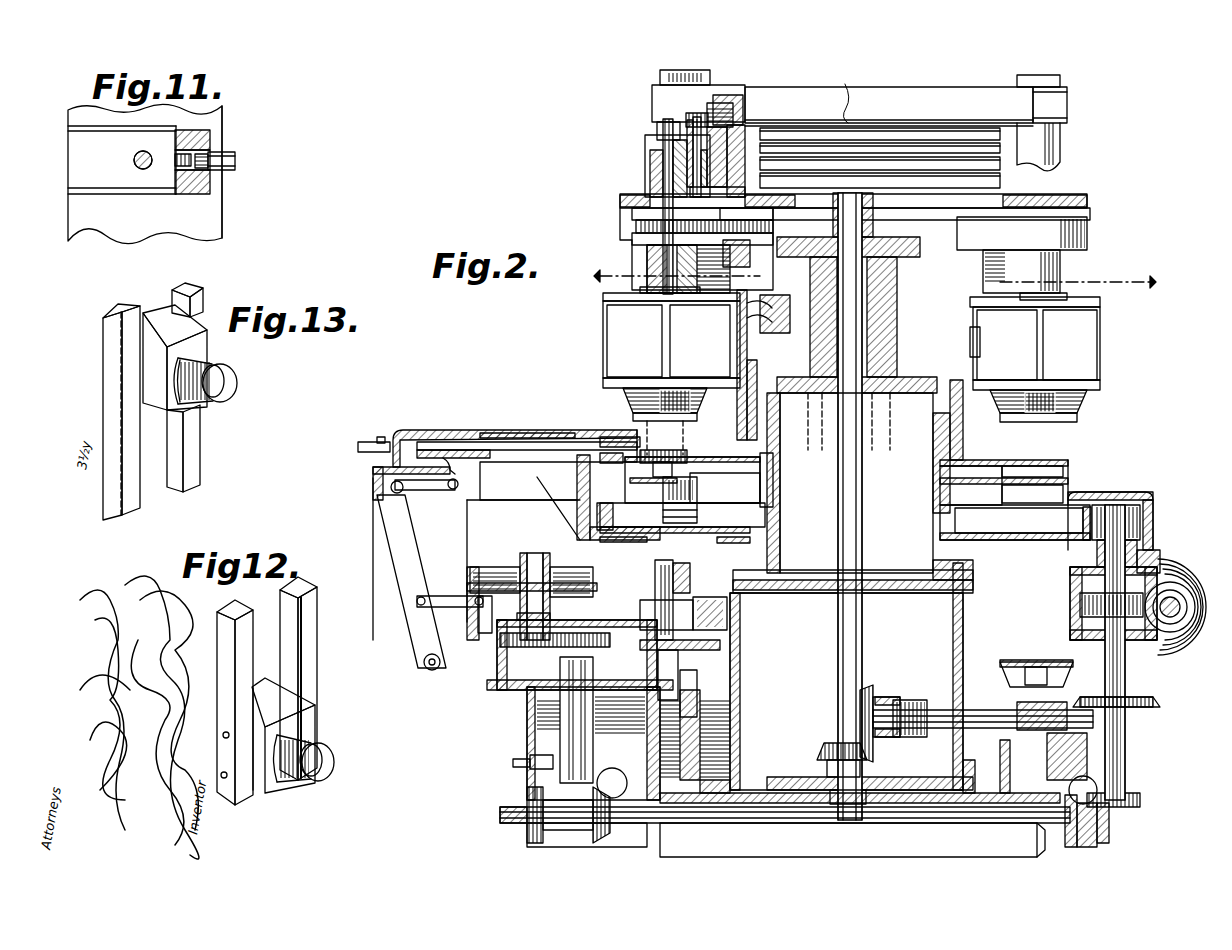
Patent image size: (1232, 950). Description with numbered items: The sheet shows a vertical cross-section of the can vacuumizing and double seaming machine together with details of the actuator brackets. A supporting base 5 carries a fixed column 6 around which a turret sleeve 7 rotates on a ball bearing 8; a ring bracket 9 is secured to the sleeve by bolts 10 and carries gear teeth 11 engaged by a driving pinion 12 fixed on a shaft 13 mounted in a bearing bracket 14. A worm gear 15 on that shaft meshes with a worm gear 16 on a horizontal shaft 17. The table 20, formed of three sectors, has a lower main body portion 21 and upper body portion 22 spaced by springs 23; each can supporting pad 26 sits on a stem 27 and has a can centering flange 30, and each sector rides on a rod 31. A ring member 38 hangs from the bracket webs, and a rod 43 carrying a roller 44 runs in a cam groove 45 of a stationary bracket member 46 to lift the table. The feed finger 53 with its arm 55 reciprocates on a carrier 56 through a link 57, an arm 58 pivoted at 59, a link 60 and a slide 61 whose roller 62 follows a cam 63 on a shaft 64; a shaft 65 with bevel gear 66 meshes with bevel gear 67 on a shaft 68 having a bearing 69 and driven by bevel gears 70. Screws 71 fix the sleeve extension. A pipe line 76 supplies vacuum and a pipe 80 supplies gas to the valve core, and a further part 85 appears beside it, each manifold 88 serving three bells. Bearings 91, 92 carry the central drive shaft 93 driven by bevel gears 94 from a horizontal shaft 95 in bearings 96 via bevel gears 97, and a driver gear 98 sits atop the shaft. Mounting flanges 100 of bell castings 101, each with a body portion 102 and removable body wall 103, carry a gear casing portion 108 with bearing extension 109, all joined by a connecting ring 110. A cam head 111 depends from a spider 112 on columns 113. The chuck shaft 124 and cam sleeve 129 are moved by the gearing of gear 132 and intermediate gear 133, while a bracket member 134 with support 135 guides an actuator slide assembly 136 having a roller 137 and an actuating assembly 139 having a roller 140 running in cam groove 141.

In FIG. 2, the supporting base 5 is at (752, 782).
In FIG. 2, the column 6 is at (782, 528).
In FIG. 2, the turret sleeve 7 is at (781, 488).
In FIG. 2, the ball bearing 8 is at (782, 556).
In FIG. 2, the ring bracket 9 is at (844, 533).
In FIG. 2, the bolts 10 is at (998, 512).
In FIG. 2, the gear teeth 11 is at (577, 516).
In FIG. 2, the driving pinion 12 is at (1155, 520).
In FIG. 2, the shaft 13 is at (1150, 556).
In FIG. 2, the bearing bracket 14 is at (1132, 500).
In FIG. 2, the worm gear 15 is at (1080, 604).
In FIG. 2, the worm gear 16 is at (1176, 590).
In FIG. 2, the horizontal shaft 17 is at (1194, 650).
In FIG. 2, the table 20 is at (1072, 480).
In FIG. 2, the lower main body portion 21 is at (692, 480).
In FIG. 2, the upper body portion 22 is at (688, 458).
In FIG. 2, the springs 23 is at (636, 472).
In FIG. 2, the can supporting pad 26 is at (650, 450).
In FIG. 2, the stem 27 is at (663, 490).
In FIG. 2, the can centering flange 30 is at (672, 462).
In FIG. 2, the rod 31 is at (687, 679).
In FIG. 2, the ring member 38 is at (1040, 667).
In FIG. 2, the rod 43 is at (645, 598).
In FIG. 2, the roller 44 is at (680, 675).
In FIG. 2, the cam groove 45 is at (700, 590).
In FIG. 2, the bracket member 46 is at (727, 603).
In FIG. 2, the feed finger 53 is at (520, 443).
In FIG. 2, the arm 55 is at (645, 455).
In FIG. 2, the carrier 56 is at (440, 443).
In FIG. 2, the link 57 is at (400, 492).
In FIG. 2, the arm 58 is at (408, 555).
In FIG. 2, the pivot 59 is at (424, 662).
In FIG. 2, the link 60 is at (420, 607).
In FIG. 2, the slide 61 is at (418, 598).
In FIG. 2, the roller 62 is at (550, 574).
In FIG. 2, the cam 63 is at (500, 568).
In FIG. 2, the shaft 64 is at (550, 612).
In FIG. 2, the shaft 65 is at (580, 718).
In FIG. 2, the bevel gear 66 is at (536, 784).
In FIG. 2, the bevel gear 67 is at (573, 817).
In FIG. 2, the shaft 68 is at (756, 815).
In FIG. 2, the bearing 69 is at (630, 786).
In FIG. 2, the bevel gears 70 is at (1108, 810).
In FIG. 2, the screws 71 is at (738, 406).
In FIG. 2, the pipe line 76 is at (880, 434).
In FIG. 2, the pipe 80 is at (826, 444).
In FIG. 2, the block 85 is at (946, 300).
In FIG. 2, the manifold 88 is at (768, 323).
In FIG. 2, the anti-friction bearing 91 is at (878, 212).
In FIG. 2, the bearing 92 is at (852, 816).
In FIG. 2, the drive shaft 93 is at (845, 618).
In FIG. 2, the bevel gears 94 is at (858, 712).
In FIG. 2, the horizontal shaft 95 is at (934, 712).
In FIG. 2, the bearings 96 is at (895, 700).
In FIG. 2, the bevel gears 97 is at (1142, 698).
In FIG. 2, the driver gear 98 is at (796, 208).
In FIG. 2, the mounting flanges 100 is at (966, 352).
In FIG. 2, the bell castings 101 is at (600, 312).
In FIG. 2, the body portion 102 is at (853, 342).
In FIG. 2, the removable body wall 103 is at (612, 334).
In FIG. 2, the gear casing portion 108 is at (620, 212).
In FIG. 2, the bearing extension 109 is at (704, 263).
In FIG. 11, the connecting ring 110 is at (222, 116).
In FIG. 2, the connecting ring 110 is at (622, 194).
In FIG. 2, the cam head 111 is at (925, 130).
In FIG. 2, the spider 112 is at (876, 106).
In FIG. 2, the columns 113 is at (1062, 140).
In FIG. 11, the chuck shaft 124 is at (136, 161).
In FIG. 2, the chuck shaft 124 is at (655, 145).
In FIG. 11, the cam sleeve 129 is at (136, 157).
In FIG. 2, the gear 132 is at (636, 227).
In FIG. 2, the intermediate gear 133 is at (735, 205).
In FIG. 11, the bracket member 134 is at (128, 194).
In FIG. 2, the bracket member 134 is at (645, 160).
In FIG. 11, the support 135 is at (210, 140).
In FIG. 2, the support 135 is at (700, 113).
In FIG. 11, the actuator slide assembly 136 is at (200, 194).
In FIG. 12, the actuator slide assembly 136 is at (308, 698).
In FIG. 2, the actuator slide assembly 136 is at (707, 165).
In FIG. 12, the roller 137 is at (324, 740).
In FIG. 2, the roller 137 is at (770, 161).
In FIG. 11, the actuating assembly 139 is at (198, 130).
In FIG. 13, the actuating assembly 139 is at (98, 412).
In FIG. 2, the actuating assembly 139 is at (703, 124).
In FIG. 11, the roller 140 is at (235, 158).
In FIG. 13, the roller 140 is at (226, 372).
In FIG. 2, the roller 140 is at (733, 112).
In FIG. 2, the cam groove 141 is at (743, 122).